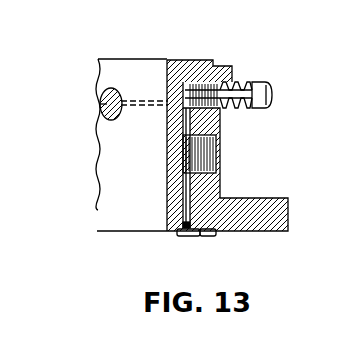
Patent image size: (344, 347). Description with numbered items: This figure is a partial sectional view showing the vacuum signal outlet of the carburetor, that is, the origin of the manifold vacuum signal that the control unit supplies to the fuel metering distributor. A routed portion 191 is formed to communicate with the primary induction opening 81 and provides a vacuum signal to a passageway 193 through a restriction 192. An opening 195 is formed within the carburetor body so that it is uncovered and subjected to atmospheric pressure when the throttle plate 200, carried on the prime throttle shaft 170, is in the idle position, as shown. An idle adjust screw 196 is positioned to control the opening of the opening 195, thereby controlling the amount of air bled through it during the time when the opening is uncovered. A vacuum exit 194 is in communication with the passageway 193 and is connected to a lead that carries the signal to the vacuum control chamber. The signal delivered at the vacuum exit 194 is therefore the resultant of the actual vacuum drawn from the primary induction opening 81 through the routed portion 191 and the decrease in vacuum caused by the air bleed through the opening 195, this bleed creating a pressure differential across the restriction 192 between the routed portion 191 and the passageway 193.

The primary induction opening 81 is at (113, 166).
The prime throttle shaft 170 is at (100, 113).
The routed portion 191 is at (171, 234).
The restriction 192 is at (210, 233).
The passageway 193 is at (188, 200).
The vacuum exit 194 is at (205, 168).
The opening 195 is at (169, 99).
The idle adjust screw 196 is at (236, 80).
The throttle plate 200 is at (115, 94).